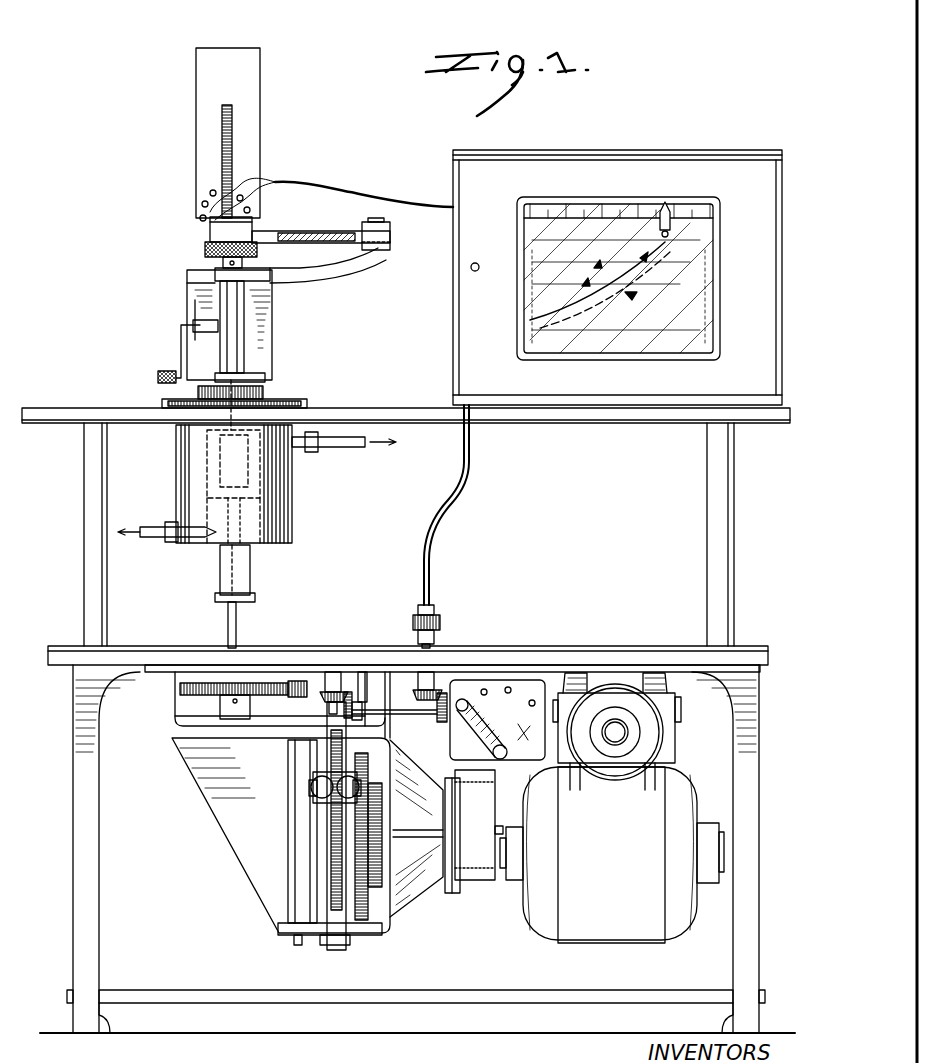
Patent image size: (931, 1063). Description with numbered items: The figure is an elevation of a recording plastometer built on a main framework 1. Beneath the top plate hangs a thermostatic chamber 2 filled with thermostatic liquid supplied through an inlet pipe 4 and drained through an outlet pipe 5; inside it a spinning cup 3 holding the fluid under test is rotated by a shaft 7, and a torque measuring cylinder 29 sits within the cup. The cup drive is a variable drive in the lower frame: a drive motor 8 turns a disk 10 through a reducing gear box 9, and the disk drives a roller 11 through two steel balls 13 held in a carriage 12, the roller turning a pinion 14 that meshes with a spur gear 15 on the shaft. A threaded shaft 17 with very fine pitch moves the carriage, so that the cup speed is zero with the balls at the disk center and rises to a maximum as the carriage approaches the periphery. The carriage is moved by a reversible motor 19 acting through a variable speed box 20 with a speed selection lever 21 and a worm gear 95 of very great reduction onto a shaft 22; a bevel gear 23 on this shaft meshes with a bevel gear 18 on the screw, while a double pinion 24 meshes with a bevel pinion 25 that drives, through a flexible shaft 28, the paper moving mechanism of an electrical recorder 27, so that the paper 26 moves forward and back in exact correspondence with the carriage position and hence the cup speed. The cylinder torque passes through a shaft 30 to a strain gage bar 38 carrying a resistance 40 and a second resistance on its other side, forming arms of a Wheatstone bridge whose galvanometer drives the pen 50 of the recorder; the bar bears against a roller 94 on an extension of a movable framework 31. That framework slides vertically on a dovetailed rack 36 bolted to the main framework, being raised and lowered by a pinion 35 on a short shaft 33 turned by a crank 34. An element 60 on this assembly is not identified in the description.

The main framework 1 is at (48, 410).
The thermostatic chamber 2 is at (229, 92).
The spinning cup 3 is at (207, 494).
The inlet pipe 4 is at (150, 540).
The outlet pipe 5 is at (338, 447).
The shaft 7 is at (252, 586).
The drive motor 8 is at (612, 855).
The reducing gear box 9 is at (474, 831).
The disk 10 is at (378, 922).
The roller 11 is at (290, 856).
The carriage 12 is at (316, 778).
The steel balls 13 is at (313, 794).
The pinion 14 is at (292, 698).
The spur gear 15 is at (190, 696).
The threaded shaft 17 is at (328, 823).
The bevel gear 18 is at (326, 690).
The reversible motor 19 is at (618, 782).
The variable speed box 20 is at (497, 720).
The speed selection lever 21 is at (483, 723).
The shaft 22 is at (417, 716).
The bevel gear 23 is at (348, 692).
The double pinion 24 is at (444, 700).
The bevel pinion 25 is at (430, 692).
The paper 26 is at (690, 268).
The electrical recorder 27 is at (712, 160).
The flexible shaft 28 is at (463, 512).
The torque measuring cylinder 29 is at (207, 452).
The shaft 30 is at (200, 402).
The movable framework 31 is at (273, 325).
The short shaft 33 is at (202, 318).
The crank 34 is at (178, 352).
The pinion 35 is at (232, 338).
The dovetailed rack 36 is at (234, 119).
The strain gage bar 38 is at (372, 252).
The resistance 40 is at (310, 236).
The pen 50 is at (672, 233).
The knurled nut 60 is at (205, 249).
The roller 94 is at (388, 228).
The worm gear 95 is at (668, 708).